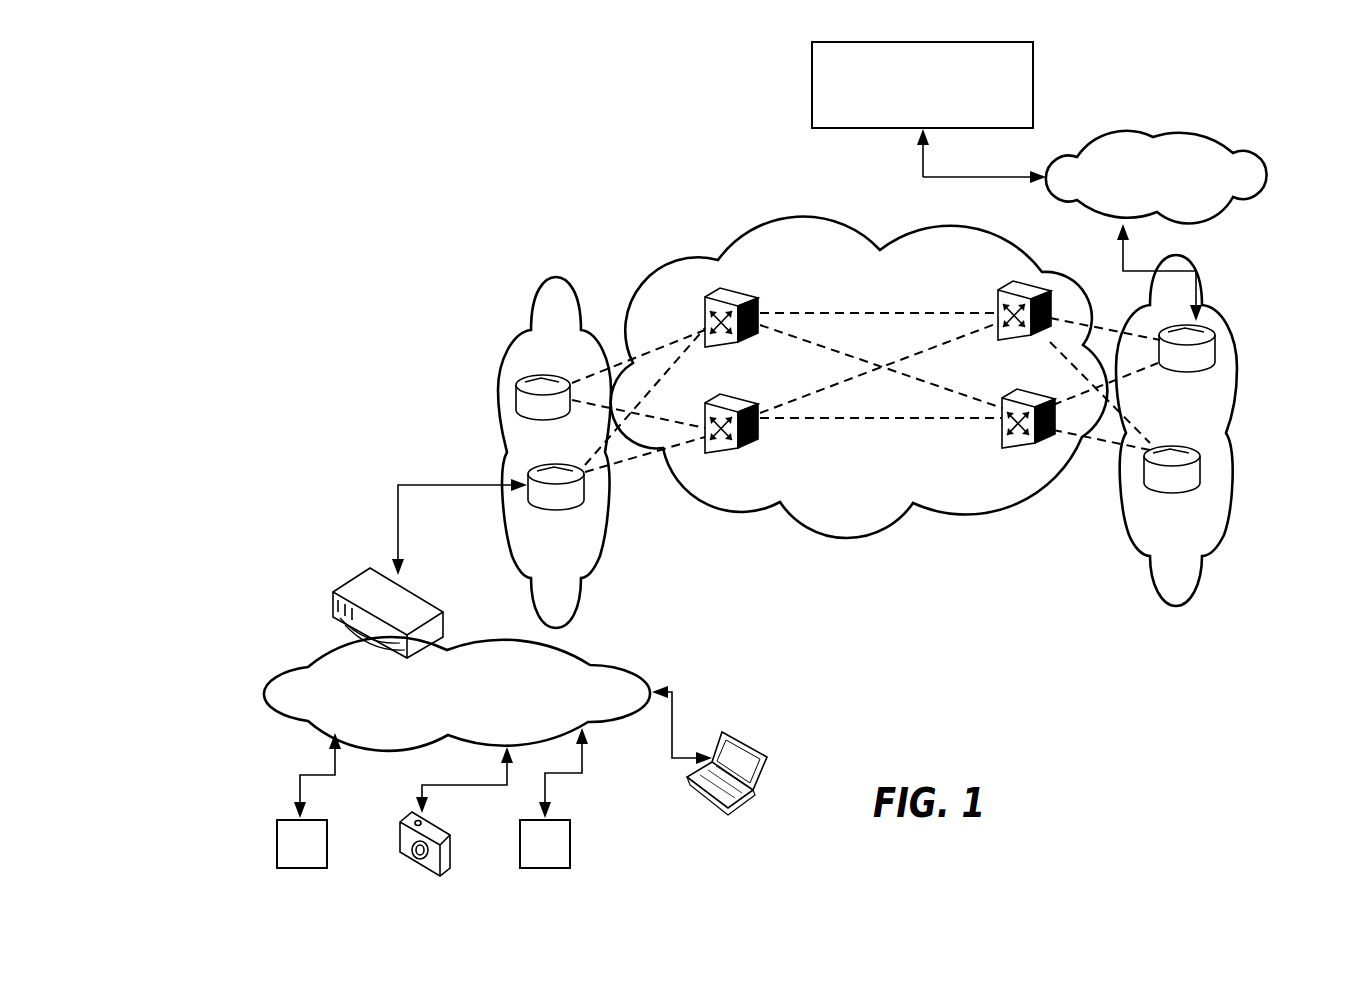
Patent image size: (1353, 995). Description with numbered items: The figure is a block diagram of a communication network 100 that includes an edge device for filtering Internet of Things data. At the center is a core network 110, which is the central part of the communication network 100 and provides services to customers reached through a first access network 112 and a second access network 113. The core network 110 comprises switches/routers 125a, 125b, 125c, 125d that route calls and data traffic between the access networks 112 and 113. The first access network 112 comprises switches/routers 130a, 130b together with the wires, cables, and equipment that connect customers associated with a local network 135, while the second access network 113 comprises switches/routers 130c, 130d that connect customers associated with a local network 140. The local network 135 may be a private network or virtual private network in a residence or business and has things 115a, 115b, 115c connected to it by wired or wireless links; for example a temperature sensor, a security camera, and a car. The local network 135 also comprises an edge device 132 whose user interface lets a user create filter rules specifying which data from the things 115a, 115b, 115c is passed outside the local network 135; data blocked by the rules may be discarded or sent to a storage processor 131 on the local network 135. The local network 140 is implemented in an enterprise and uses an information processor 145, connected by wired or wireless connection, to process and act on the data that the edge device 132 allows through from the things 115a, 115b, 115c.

The communication network 100 is at (460, 160).
The core network 110 is at (785, 217).
The first access network 112 is at (557, 277).
The second access network 113 is at (1168, 257).
The switch/router 125a is at (747, 297).
The switch/router 125b is at (722, 400).
The switch/router 125c is at (998, 300).
The switch/router 125d is at (1043, 393).
The switch/router 130a is at (521, 373).
The switch/router 130b is at (530, 507).
The switch/router 130c is at (1207, 372).
The switch/router 130d is at (1147, 495).
The storage processor 131 is at (738, 738).
The edge device 132 is at (352, 582).
The local network 135 is at (457, 694).
The local network 140 is at (1156, 177).
The information processor 145 is at (922, 85).
The thing 115a is at (277, 842).
The thing 115b is at (397, 827).
The thing 115c is at (520, 827).